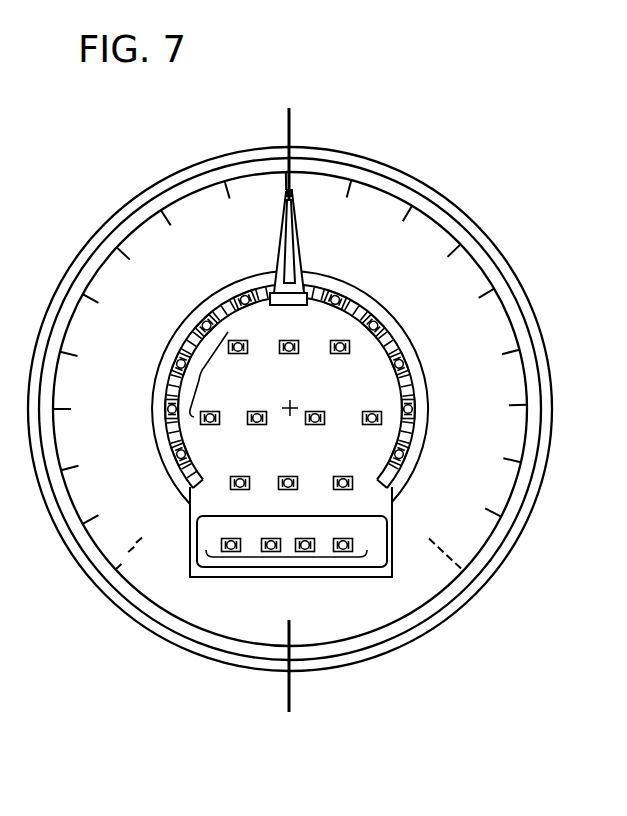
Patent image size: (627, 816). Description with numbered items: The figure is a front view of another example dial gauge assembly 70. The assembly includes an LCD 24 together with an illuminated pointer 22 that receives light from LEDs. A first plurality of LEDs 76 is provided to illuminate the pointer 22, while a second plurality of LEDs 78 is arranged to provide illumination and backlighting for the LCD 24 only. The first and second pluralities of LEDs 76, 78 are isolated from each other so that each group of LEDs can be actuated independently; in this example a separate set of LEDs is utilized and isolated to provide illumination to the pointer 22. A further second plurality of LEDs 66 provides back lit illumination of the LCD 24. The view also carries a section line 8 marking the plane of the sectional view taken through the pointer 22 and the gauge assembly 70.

The section line 8- 8 is at (300, 123).
The pointer 22 is at (297, 230).
The LCD 24 is at (372, 390).
The second plurality of LEDs 66 is at (288, 560).
The dial gauge assembly 70 is at (434, 127).
The first plurality of LEDs 76 is at (360, 485).
The second plurality of LEDs 78 is at (203, 372).